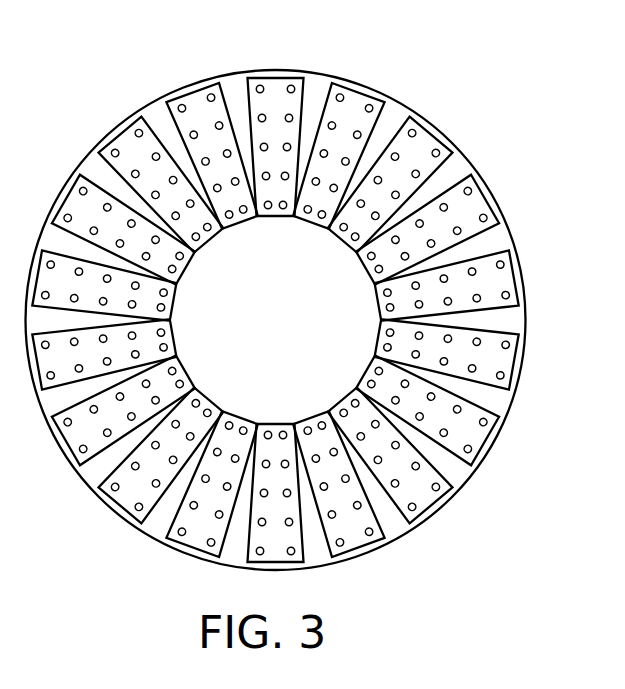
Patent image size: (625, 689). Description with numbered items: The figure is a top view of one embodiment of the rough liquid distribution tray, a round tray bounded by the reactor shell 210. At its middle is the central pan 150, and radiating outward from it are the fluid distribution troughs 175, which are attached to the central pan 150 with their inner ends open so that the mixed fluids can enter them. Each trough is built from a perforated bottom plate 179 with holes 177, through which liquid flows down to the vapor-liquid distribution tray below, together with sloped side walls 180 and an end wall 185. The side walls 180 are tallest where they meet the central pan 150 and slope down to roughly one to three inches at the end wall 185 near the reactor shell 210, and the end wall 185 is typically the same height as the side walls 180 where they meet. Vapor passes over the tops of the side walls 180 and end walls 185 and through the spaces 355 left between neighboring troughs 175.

The central pan 150 is at (304, 327).
The fluid distribution troughs 175 is at (472, 187).
The holes 177 is at (378, 180).
The perforated bottom plate 179 is at (396, 195).
The side walls 180 is at (490, 382).
The end wall 185 is at (445, 497).
The reactor shell 210 is at (527, 320).
The spaces 355 is at (492, 237).